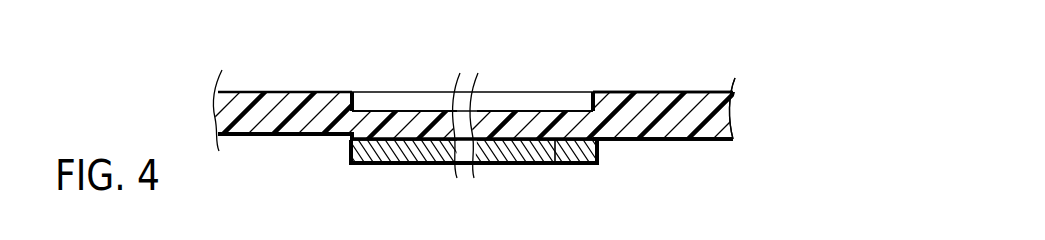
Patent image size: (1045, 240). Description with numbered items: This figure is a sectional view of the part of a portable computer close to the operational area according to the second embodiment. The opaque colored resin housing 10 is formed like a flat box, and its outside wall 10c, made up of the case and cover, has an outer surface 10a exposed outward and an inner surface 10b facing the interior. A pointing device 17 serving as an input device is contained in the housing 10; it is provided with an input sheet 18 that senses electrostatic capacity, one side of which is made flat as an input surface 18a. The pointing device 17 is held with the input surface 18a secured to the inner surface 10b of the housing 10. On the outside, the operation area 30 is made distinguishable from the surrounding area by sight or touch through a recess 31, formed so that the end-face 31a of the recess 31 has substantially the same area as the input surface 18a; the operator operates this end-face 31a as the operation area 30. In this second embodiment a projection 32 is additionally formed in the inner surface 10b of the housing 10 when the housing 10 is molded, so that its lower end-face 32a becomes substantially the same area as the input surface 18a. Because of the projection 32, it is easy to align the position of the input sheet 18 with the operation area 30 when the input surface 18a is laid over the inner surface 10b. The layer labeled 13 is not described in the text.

The housing 10 is at (658, 92).
The outer surface 10a is at (717, 92).
The inner surface 10b is at (683, 140).
The outside wall 10c is at (732, 117).
The insulating layer 13 is at (255, 92).
The pointing device 17 is at (368, 163).
The input sheet 18 is at (432, 163).
The input surface 18a is at (430, 111).
The operation area 30 is at (364, 111).
The recess 31 is at (597, 106).
The end-face of recess 31a is at (530, 111).
The projection 32 is at (350, 141).
The end-face of projection 32a is at (558, 163).